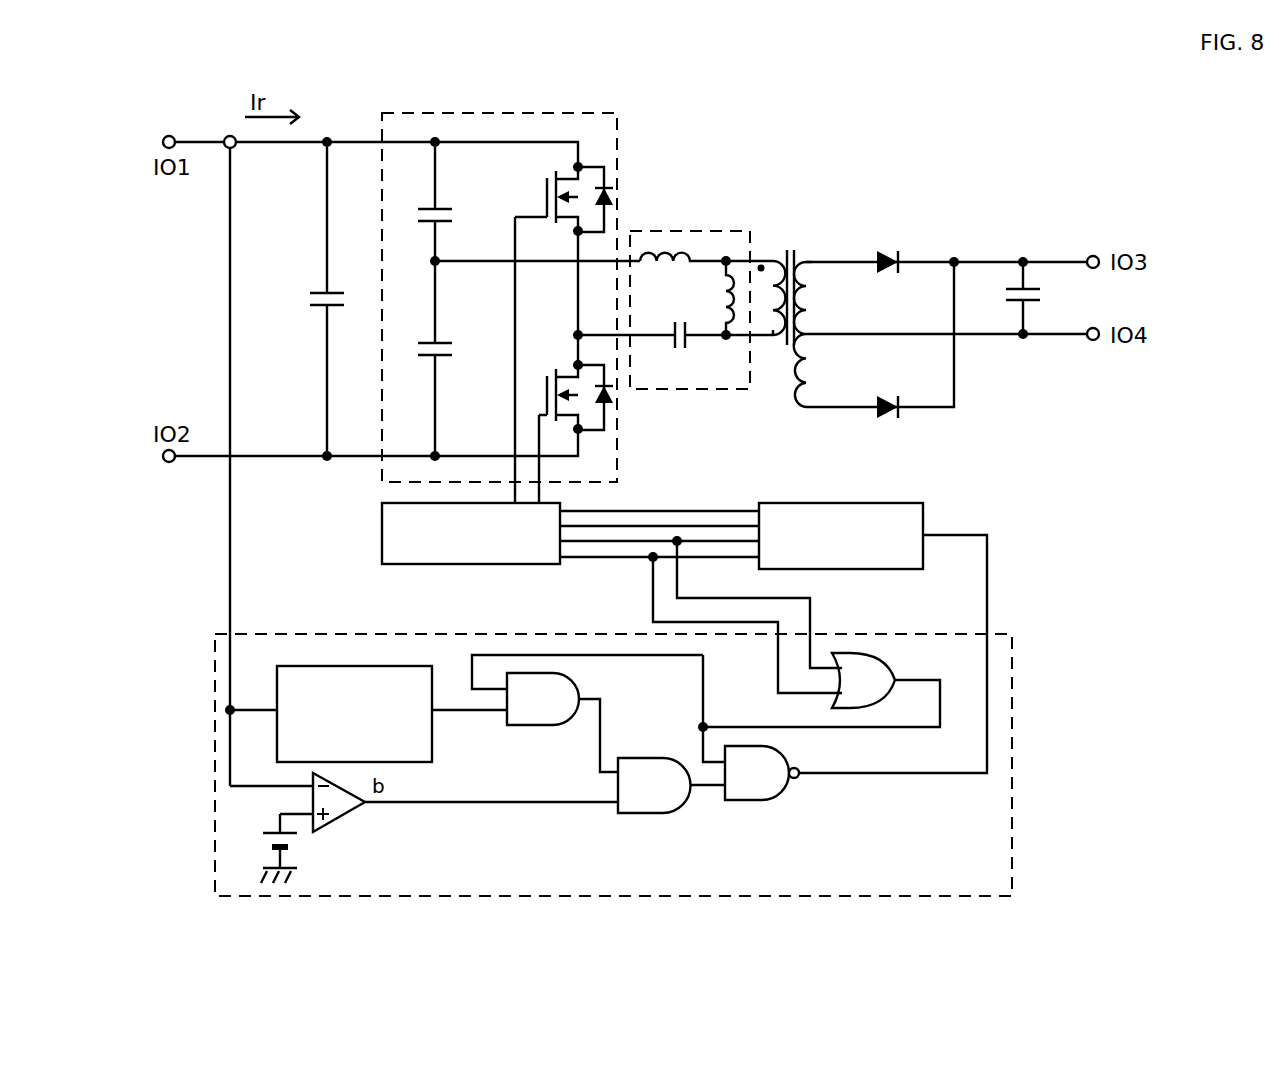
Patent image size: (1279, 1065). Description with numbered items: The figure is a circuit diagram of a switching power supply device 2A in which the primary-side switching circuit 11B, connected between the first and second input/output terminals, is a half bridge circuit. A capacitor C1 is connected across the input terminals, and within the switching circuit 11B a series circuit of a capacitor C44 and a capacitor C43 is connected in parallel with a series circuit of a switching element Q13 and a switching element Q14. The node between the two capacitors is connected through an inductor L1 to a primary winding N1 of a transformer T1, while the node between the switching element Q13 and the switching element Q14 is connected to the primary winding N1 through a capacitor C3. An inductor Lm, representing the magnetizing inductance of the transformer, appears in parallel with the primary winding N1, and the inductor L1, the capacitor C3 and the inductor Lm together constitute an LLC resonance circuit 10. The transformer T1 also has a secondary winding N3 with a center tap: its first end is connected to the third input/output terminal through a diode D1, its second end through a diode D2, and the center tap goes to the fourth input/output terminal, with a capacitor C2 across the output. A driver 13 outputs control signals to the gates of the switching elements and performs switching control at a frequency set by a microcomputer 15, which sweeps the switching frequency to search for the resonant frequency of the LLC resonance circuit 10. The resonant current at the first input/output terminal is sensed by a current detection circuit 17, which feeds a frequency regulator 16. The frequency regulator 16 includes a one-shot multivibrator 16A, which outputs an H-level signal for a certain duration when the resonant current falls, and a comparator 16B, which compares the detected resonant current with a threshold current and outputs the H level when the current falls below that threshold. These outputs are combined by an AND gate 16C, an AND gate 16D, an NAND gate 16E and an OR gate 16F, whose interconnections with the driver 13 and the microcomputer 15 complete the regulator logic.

The current detection circuit 17 is at (250, 161).
The switching circuit 11B is at (618, 127).
The LLC resonance circuit 10 is at (717, 231).
The switching power supply device 2A is at (899, 168).
The driver 13 is at (382, 553).
The microcomputer 15 is at (843, 503).
The frequency regulator 16 is at (220, 633).
The one-shot multivibrator 16A is at (326, 666).
The comparator 16B is at (341, 812).
The AND gate 16C is at (507, 727).
The AND gate 16D is at (632, 814).
The NAND gate 16E is at (752, 802).
The OR gate 16F is at (855, 652).
The capacitor C1 is at (335, 299).
The capacitor C44 is at (453, 204).
The capacitor C43 is at (453, 356).
The switching element Q13 is at (564, 332).
The switching element Q14 is at (571, 421).
The inductor L1 is at (683, 273).
The inductor Lm is at (712, 298).
The capacitor C3 is at (675, 352).
The transformer T1 is at (792, 234).
The primary winding N1 is at (770, 348).
The secondary winding N3 is at (828, 247).
The diode D1 is at (888, 278).
The diode D2 is at (888, 389).
The capacitor C2 is at (1041, 298).